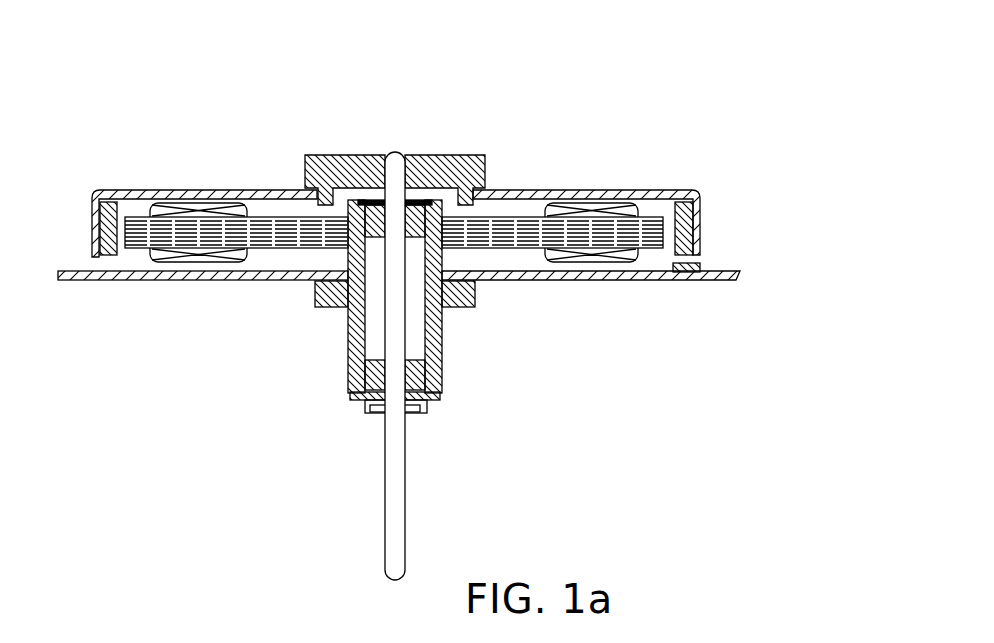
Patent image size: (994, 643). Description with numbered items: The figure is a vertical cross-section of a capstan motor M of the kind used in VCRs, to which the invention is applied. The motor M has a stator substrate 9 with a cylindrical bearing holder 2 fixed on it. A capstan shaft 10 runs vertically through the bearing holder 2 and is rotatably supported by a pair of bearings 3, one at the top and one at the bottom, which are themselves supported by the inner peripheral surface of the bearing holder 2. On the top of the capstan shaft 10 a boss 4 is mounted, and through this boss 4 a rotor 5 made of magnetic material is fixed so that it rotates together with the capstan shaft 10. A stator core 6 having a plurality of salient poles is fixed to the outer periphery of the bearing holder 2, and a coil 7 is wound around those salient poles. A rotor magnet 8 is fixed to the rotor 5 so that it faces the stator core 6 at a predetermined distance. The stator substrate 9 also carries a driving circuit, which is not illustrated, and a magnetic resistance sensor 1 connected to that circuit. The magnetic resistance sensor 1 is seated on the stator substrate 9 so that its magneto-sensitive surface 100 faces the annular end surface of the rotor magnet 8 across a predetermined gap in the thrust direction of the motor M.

The motor M is at (444, 110).
The magnetic resistance sensor 1 is at (697, 272).
The bearing holder 2 is at (348, 333).
The bearings 3 is at (372, 228).
The boss 4 is at (460, 155).
The rotor 5 is at (533, 190).
The stator core 6 is at (280, 250).
The coil 7 is at (163, 257).
The rotor magnet 8 is at (699, 198).
The stator substrate 9 is at (557, 281).
The capstan shaft 10 is at (390, 465).
The magneto-sensitive surface 100 is at (698, 263).